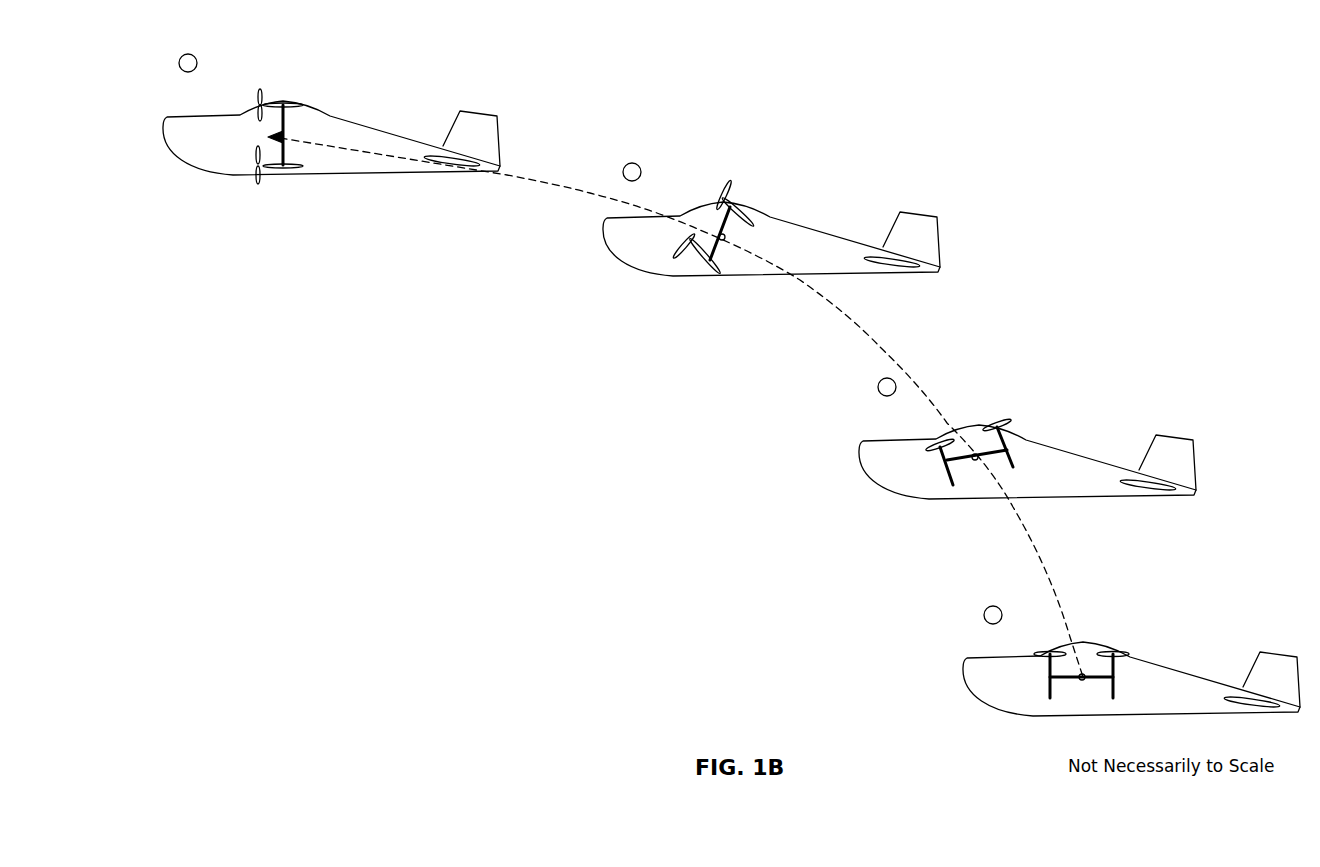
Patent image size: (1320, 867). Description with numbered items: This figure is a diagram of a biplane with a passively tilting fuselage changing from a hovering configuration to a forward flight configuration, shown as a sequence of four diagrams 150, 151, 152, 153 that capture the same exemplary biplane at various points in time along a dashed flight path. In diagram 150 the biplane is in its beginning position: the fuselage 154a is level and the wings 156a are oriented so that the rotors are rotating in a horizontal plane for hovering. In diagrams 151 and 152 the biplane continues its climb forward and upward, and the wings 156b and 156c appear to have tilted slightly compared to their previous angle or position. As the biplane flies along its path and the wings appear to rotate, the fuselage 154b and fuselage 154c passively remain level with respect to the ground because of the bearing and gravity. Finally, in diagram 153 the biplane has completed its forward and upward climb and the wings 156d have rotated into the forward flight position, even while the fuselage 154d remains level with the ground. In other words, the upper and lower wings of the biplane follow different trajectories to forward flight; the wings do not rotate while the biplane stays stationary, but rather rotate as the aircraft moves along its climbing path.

The diagram 150 is at (1219, 592).
The diagram 151 is at (1112, 376).
The diagram 152 is at (856, 149).
The diagram 153 is at (414, 53).
The fuselage 154a is at (1200, 675).
The fuselage 154b is at (1095, 458).
The fuselage 154c is at (837, 217).
The fuselage 154d is at (397, 135).
The wings 156a is at (1122, 650).
The wings 156b is at (997, 420).
The wings 156c is at (730, 190).
The wings 156d is at (260, 87).